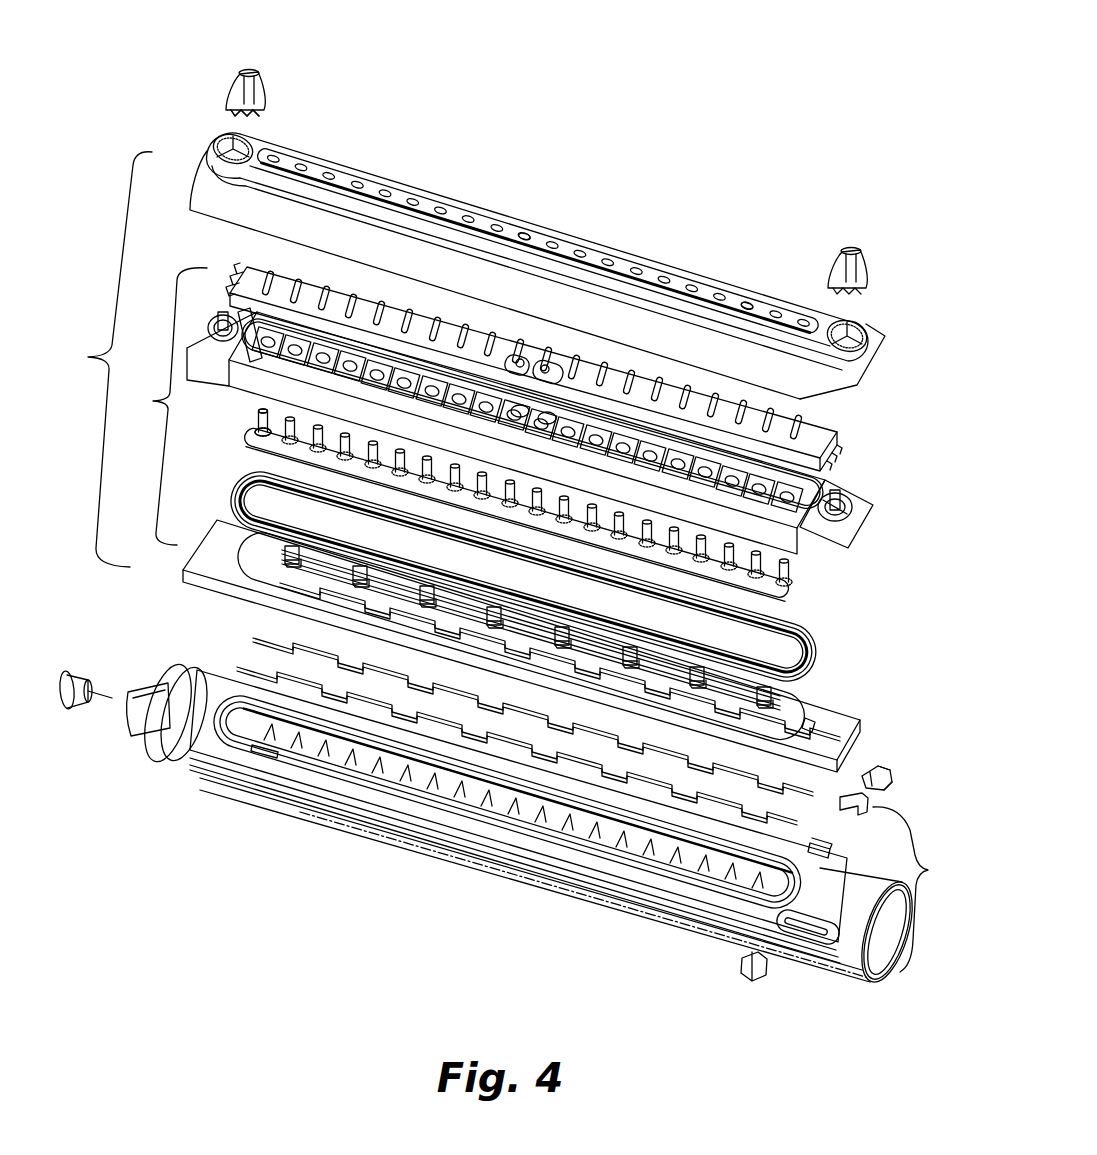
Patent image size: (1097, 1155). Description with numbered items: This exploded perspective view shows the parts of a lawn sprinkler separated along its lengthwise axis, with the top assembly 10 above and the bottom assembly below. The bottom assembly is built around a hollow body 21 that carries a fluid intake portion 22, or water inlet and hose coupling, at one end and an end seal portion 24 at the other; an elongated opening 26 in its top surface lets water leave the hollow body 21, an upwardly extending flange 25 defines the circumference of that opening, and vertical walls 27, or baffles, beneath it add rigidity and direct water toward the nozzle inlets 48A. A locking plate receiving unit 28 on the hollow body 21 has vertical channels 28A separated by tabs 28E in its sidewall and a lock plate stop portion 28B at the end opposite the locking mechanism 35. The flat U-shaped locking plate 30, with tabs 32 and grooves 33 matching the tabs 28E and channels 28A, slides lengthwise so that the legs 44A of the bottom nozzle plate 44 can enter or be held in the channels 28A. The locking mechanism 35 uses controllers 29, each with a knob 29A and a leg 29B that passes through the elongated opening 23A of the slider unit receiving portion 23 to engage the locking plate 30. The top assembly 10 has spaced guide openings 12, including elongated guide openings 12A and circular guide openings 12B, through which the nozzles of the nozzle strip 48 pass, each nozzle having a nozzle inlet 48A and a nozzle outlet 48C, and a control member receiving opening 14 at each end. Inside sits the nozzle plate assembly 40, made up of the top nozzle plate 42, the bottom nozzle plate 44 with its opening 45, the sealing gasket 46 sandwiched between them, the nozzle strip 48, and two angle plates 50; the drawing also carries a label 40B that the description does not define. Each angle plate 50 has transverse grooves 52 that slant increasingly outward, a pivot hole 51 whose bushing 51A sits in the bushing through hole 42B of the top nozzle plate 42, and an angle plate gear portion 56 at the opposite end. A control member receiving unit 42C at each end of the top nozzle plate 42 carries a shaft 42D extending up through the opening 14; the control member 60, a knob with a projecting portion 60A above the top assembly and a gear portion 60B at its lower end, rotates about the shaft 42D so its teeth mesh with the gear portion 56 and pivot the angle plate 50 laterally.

The top assembly 10 is at (101, 359).
The guide openings 12 is at (612, 258).
The elongated guide openings 12A is at (749, 303).
The circular guide openings 12B is at (524, 233).
The control member receiving opening 14 is at (868, 330).
The hollow body 21 is at (158, 755).
The fluid intake portion 22 is at (860, 978).
The bottom assembly slider unit receiving portion 23 is at (835, 852).
The elongated opening 23A is at (806, 940).
The end seal portion 24 is at (120, 736).
The flange 25 is at (496, 790).
The elongated opening 26 is at (330, 763).
The vertical walls 27 is at (543, 800).
The locking plate receiving unit 28 is at (190, 742).
The vertical channels 28A is at (443, 775).
The lock plate stop portion 28B is at (256, 752).
The tabs 28E is at (378, 795).
The controller 29 is at (892, 778).
The knob 29A is at (898, 780).
The leg 29B is at (903, 790).
The locking plate 30 is at (597, 804).
The tabs 32 is at (632, 796).
The grooves 33 is at (670, 790).
The locking mechanism 35 is at (917, 889).
The nozzle plate assembly 40 is at (161, 406).
The pin base 40B is at (256, 434).
The top nozzle plate 42 is at (822, 487).
The bushing through hole 42B is at (548, 414).
The control member receiving unit 42C is at (853, 500).
The shaft 42D is at (866, 512).
The bottom nozzle plate 44 is at (810, 700).
The tabs 44A is at (256, 566).
The opening 45 is at (245, 556).
The sealing gasket 46 is at (792, 644).
The nozzle strip 48 is at (795, 588).
The nozzle inlet 48A is at (256, 450).
The nozzle outlet 48C is at (261, 414).
The angle plate 50 is at (845, 424).
The pivot hole 51 is at (547, 367).
The bushing 51A is at (518, 360).
The grooves 52 is at (323, 304).
The angle plate gear portion 56 is at (845, 447).
The control member 60 is at (856, 240).
The projecting portion 60A is at (252, 70).
The gear portion 60B is at (268, 100).